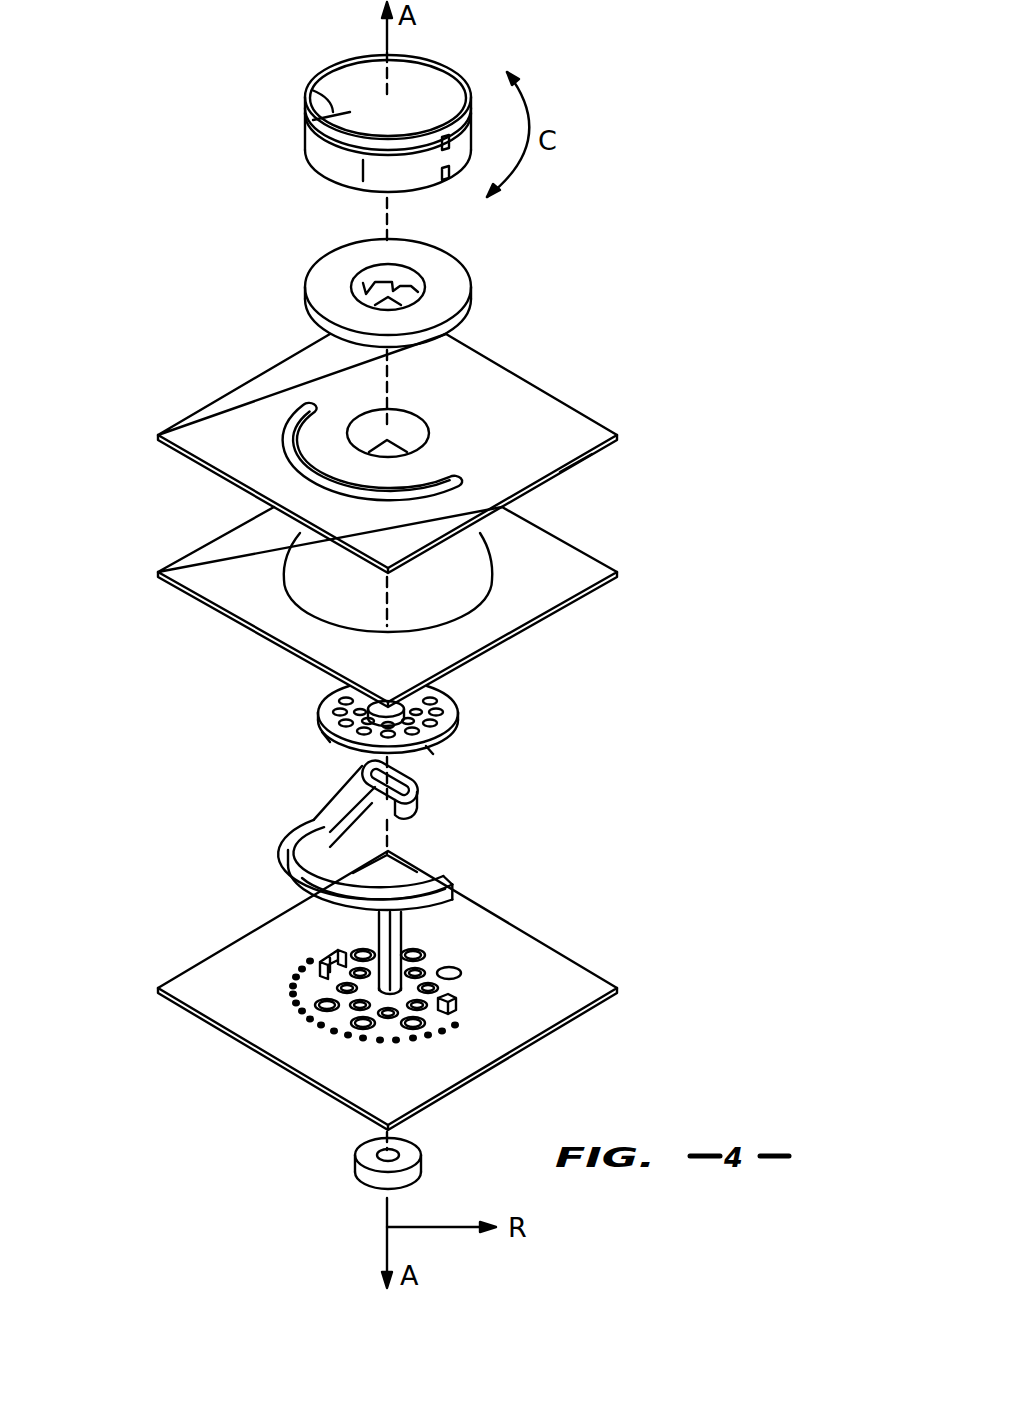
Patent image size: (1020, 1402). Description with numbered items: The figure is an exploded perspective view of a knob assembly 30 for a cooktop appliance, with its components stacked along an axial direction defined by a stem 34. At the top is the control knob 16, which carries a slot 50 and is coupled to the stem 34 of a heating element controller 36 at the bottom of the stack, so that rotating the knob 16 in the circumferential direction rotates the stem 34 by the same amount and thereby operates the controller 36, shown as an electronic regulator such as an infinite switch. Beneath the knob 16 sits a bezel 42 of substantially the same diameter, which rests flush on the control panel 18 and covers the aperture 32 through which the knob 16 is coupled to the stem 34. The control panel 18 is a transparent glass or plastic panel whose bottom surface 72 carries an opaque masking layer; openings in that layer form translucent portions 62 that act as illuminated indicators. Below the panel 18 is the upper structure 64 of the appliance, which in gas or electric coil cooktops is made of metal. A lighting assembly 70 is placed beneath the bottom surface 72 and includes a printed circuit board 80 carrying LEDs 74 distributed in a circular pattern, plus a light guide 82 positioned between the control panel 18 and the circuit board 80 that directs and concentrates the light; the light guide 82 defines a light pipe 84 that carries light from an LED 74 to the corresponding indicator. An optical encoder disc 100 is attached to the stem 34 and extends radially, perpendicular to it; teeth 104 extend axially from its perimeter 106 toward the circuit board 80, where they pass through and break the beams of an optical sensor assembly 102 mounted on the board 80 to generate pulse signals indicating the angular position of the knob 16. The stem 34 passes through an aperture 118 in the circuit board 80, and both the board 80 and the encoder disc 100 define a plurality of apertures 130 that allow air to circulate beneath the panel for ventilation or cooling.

The control knob 16 is at (427, 84).
The slot in cap 50 is at (340, 110).
The knob assembly 30 is at (167, 197).
The bezel 42 is at (443, 277).
The aperture 32 is at (403, 428).
The translucent portions 62 is at (297, 408).
The control panel 18 is at (410, 446).
The bottom surface 72 is at (583, 463).
The upper structure 64 is at (573, 572).
The apertures 130 is at (430, 694).
The teeth 104 is at (330, 742).
The optical encoder disc 100 is at (418, 828).
The perimeter 106 is at (430, 748).
The light guide 82 is at (381, 833).
The light pipe 84 is at (417, 878).
The stem 34 is at (402, 932).
The lighting assembly 70 is at (192, 946).
The printed circuit board 80 is at (527, 1013).
The LEDs 74 is at (337, 1030).
The aperture 118 is at (300, 976).
The optical sensor assembly 102 is at (323, 944).
The heating element controller 36 is at (407, 1152).